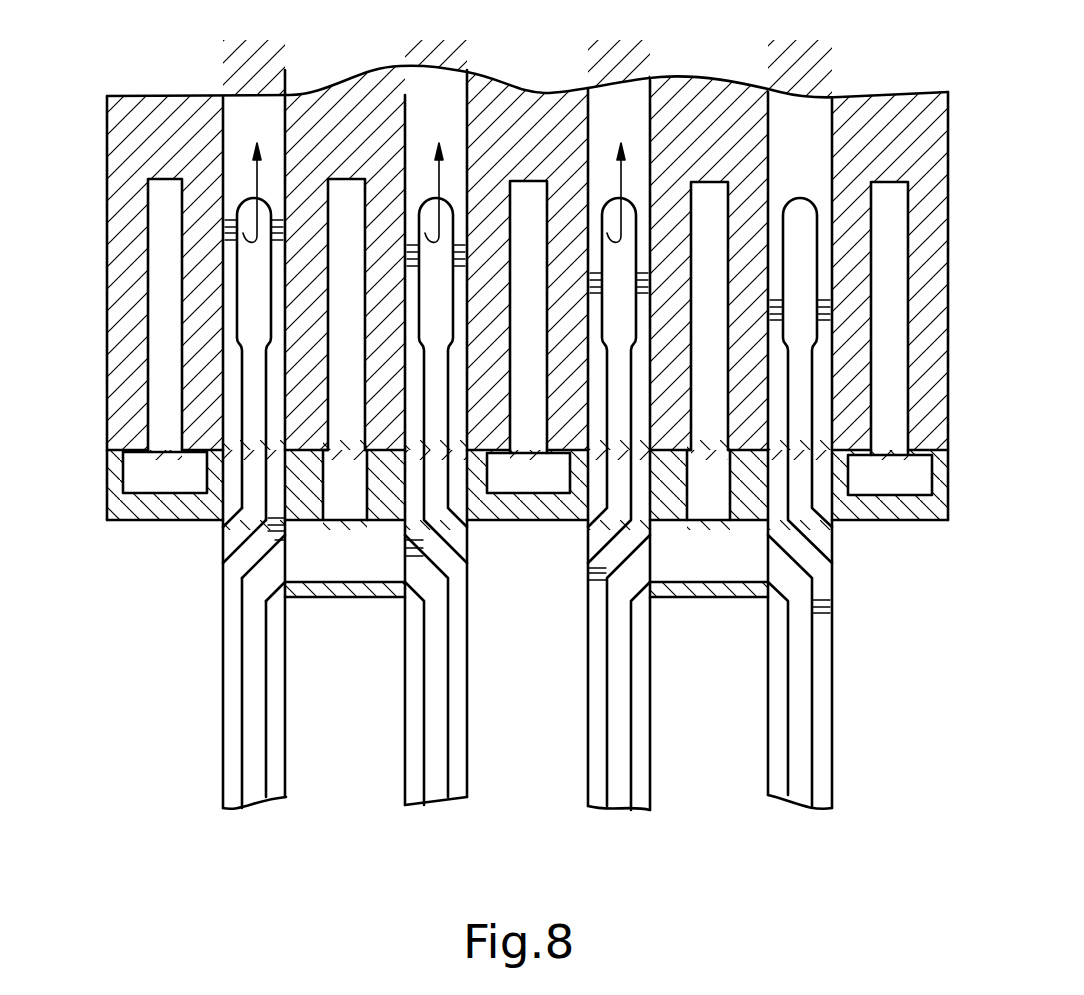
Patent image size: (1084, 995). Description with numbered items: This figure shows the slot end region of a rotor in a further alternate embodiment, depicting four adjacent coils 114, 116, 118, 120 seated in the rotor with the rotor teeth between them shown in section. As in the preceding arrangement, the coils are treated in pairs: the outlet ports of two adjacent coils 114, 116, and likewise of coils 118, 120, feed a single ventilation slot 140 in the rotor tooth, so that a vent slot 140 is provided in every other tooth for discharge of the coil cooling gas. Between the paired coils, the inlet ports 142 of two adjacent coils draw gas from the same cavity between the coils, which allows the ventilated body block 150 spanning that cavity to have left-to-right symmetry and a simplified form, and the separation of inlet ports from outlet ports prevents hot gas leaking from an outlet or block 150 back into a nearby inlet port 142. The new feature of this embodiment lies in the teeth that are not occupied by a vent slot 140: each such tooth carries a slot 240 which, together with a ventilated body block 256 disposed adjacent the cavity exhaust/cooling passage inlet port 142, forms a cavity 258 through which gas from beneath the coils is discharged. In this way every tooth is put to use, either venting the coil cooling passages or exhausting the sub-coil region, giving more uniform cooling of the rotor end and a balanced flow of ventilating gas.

The coil 114 is at (245, 439).
The coil 116 is at (408, 770).
The coil 118 is at (588, 765).
The coil 120 is at (765, 755).
The ventilation slot 140 is at (365, 225).
The inlet port 142 is at (241, 568).
The ventilated body block 150 is at (350, 593).
The slot 240 is at (182, 225).
The ventilated body block 256 is at (107, 521).
The cavity 258 is at (163, 478).